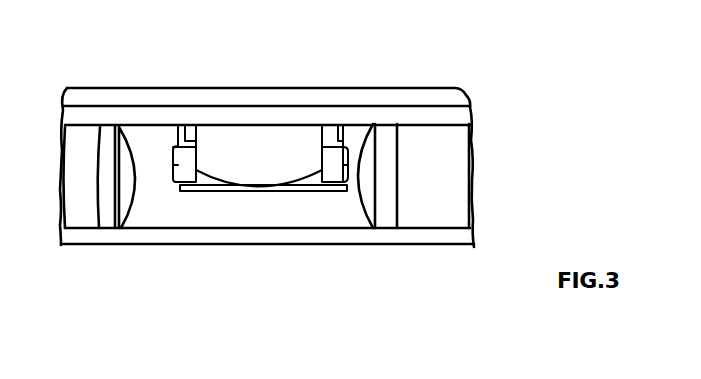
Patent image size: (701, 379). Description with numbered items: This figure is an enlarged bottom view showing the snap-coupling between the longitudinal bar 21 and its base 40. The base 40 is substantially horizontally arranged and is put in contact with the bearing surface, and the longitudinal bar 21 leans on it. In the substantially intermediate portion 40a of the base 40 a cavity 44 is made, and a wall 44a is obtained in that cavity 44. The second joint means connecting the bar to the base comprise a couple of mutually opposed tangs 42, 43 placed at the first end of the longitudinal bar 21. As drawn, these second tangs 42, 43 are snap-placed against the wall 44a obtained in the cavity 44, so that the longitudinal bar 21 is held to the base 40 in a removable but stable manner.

The base 40 is at (433, 98).
The substantially intermediate portion 40a is at (270, 252).
The second tang 42 is at (172, 152).
The second tang 43 is at (346, 160).
The longitudinal bar 21 is at (258, 158).
The cavity 44 is at (339, 220).
The wall 44a is at (159, 190).